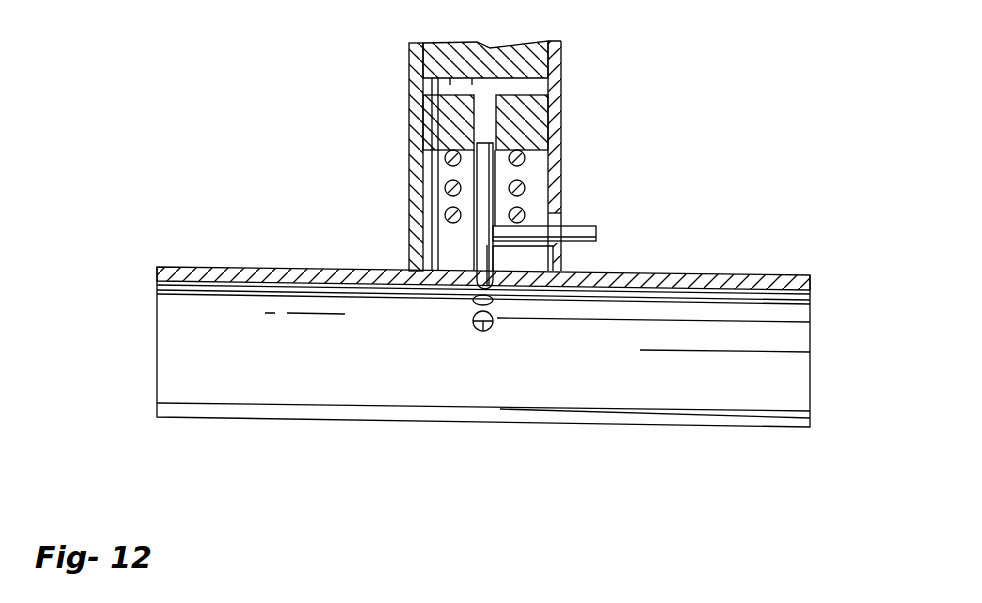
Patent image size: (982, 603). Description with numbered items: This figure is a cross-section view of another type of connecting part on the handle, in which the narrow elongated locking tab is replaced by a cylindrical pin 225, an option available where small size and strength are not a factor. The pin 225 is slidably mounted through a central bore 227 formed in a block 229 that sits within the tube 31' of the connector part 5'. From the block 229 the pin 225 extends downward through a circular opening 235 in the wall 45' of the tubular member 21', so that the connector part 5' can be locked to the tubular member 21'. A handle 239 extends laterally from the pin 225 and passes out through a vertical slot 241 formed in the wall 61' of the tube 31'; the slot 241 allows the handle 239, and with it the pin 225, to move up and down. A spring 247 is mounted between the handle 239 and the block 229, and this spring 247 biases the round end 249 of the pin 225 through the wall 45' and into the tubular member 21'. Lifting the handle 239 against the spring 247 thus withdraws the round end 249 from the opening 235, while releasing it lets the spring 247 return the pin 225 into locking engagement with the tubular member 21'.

The connector part 5' is at (513, 337).
The tubular member 21' is at (476, 235).
The tube 31' is at (547, 156).
The wall 61' is at (360, 174).
The cylindrical pin 225 is at (476, 257).
The central bore 227 is at (492, 117).
The block 229 is at (446, 161).
The circular opening 235 is at (464, 284).
The handle 239 is at (590, 233).
The vertical slot 241 is at (558, 207).
The spring 247 is at (524, 186).
The round end 249 is at (494, 289).
The wall 45' is at (613, 255).